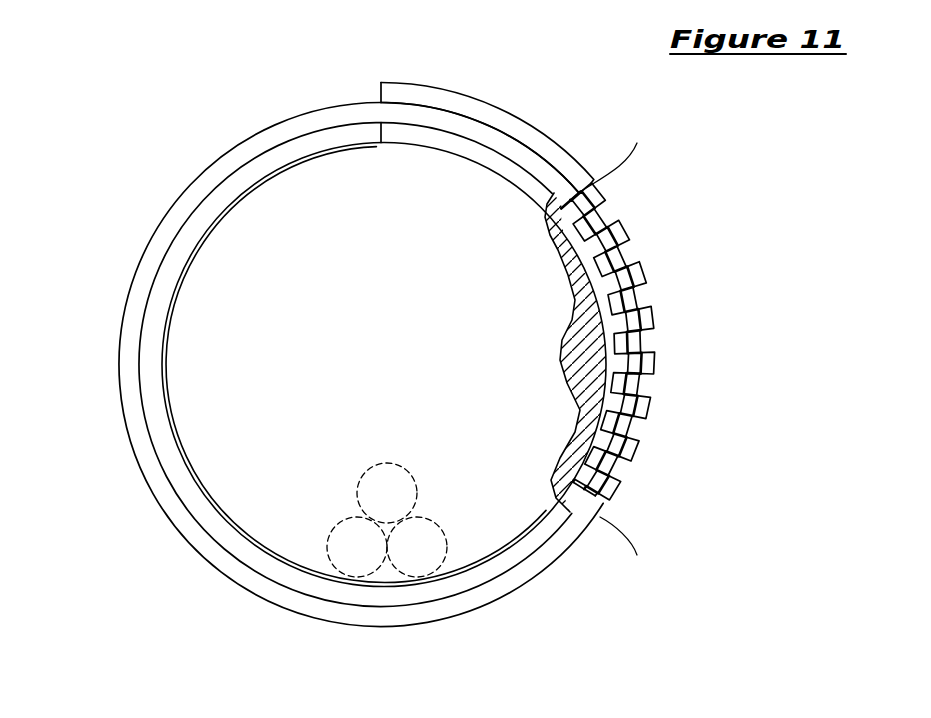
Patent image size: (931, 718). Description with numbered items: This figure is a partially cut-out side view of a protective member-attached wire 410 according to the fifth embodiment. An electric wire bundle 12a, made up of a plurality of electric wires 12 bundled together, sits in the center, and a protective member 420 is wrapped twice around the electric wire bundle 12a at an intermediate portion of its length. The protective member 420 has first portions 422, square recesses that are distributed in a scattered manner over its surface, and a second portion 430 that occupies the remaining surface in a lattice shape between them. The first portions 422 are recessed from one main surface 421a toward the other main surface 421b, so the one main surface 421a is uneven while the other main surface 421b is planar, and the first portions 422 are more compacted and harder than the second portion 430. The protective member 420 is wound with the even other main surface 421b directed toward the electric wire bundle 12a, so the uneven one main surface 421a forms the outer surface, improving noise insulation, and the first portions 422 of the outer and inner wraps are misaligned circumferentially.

The protective member-attached wire 410 is at (105, 117).
The protective member 420 is at (272, 118).
The one main surface 421a is at (655, 422).
The other main surface 421b is at (600, 419).
The first portion 422 is at (633, 263).
The second portion 430 is at (655, 330).
The electric wire 12 is at (445, 517).
The electric wire bundle 12a is at (477, 540).